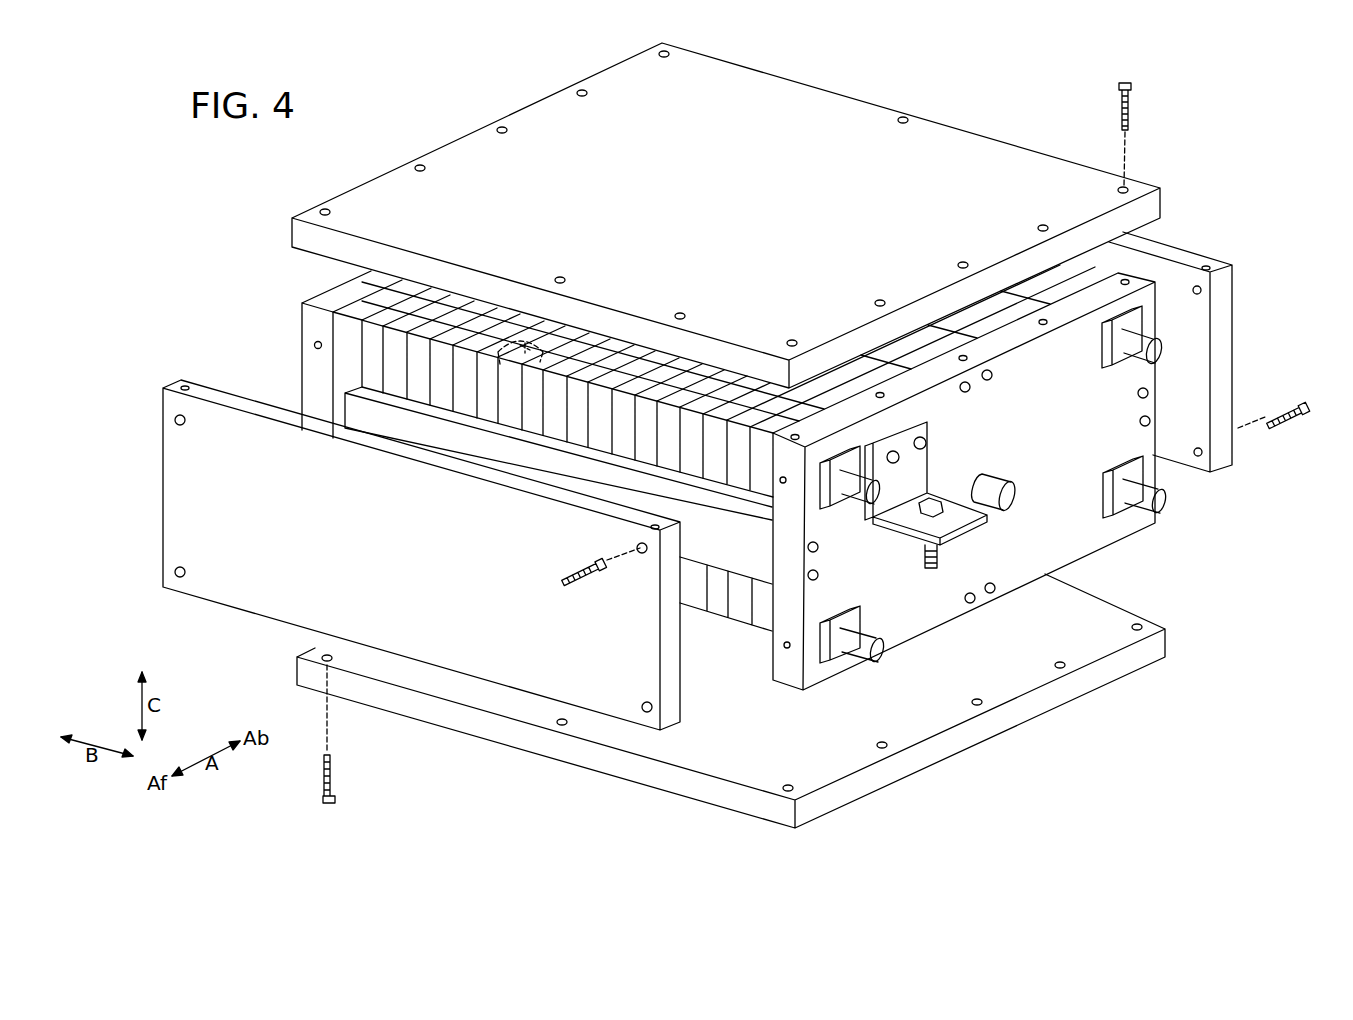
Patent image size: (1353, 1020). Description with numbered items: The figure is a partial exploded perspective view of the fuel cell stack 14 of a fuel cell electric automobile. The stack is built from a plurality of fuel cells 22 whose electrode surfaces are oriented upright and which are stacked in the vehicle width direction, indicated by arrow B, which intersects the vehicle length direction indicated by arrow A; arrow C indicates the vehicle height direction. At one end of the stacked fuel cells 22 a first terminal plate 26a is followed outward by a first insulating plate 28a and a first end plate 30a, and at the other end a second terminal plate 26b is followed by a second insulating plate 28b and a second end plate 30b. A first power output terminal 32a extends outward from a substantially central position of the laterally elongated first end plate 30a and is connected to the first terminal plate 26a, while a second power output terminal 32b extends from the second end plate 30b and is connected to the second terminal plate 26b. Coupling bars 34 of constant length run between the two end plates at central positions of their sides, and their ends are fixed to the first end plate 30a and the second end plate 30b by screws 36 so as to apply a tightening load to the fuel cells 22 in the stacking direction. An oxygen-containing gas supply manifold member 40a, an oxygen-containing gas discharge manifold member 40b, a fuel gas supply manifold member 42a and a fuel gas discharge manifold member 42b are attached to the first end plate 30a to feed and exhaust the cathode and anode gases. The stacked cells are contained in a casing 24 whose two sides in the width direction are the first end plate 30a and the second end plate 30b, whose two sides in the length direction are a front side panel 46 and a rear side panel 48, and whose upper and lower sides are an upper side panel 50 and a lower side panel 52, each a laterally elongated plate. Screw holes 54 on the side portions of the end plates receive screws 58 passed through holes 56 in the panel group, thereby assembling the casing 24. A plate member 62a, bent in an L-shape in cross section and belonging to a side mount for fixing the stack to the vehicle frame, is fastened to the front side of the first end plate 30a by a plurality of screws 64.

The fuel cell stack 14 is at (492, 82).
The fuel cells 22 is at (553, 428).
The casing 24 is at (456, 118).
The first terminal plate 26a is at (740, 440).
The second terminal plate 26b is at (397, 387).
The first insulating plate 28a is at (760, 443).
The second insulating plate 28b is at (377, 382).
The first end plate 30a is at (1160, 329).
The second end plate 30b is at (306, 302).
The first power output terminal 32a is at (986, 475).
The second power output terminal 32b is at (528, 330).
The coupling bars 34 is at (573, 483).
The screws 36 is at (968, 388).
The oxygen-containing gas supply manifold member 40a is at (1167, 350).
The oxygen-containing gas discharge manifold member 40b is at (860, 652).
The fuel gas supply manifold member 42a is at (1125, 510).
The fuel gas discharge manifold member 42b is at (836, 455).
The front side panel 46 is at (236, 430).
The rear side panel 48 is at (1222, 325).
The upper side panel 50 is at (985, 160).
The lower side panel 52 is at (1085, 680).
The screw holes 54 is at (1130, 277).
The holes 56 is at (1127, 188).
The screws 58 is at (1134, 103).
The plate member 62a is at (905, 515).
The screws 64 is at (925, 443).